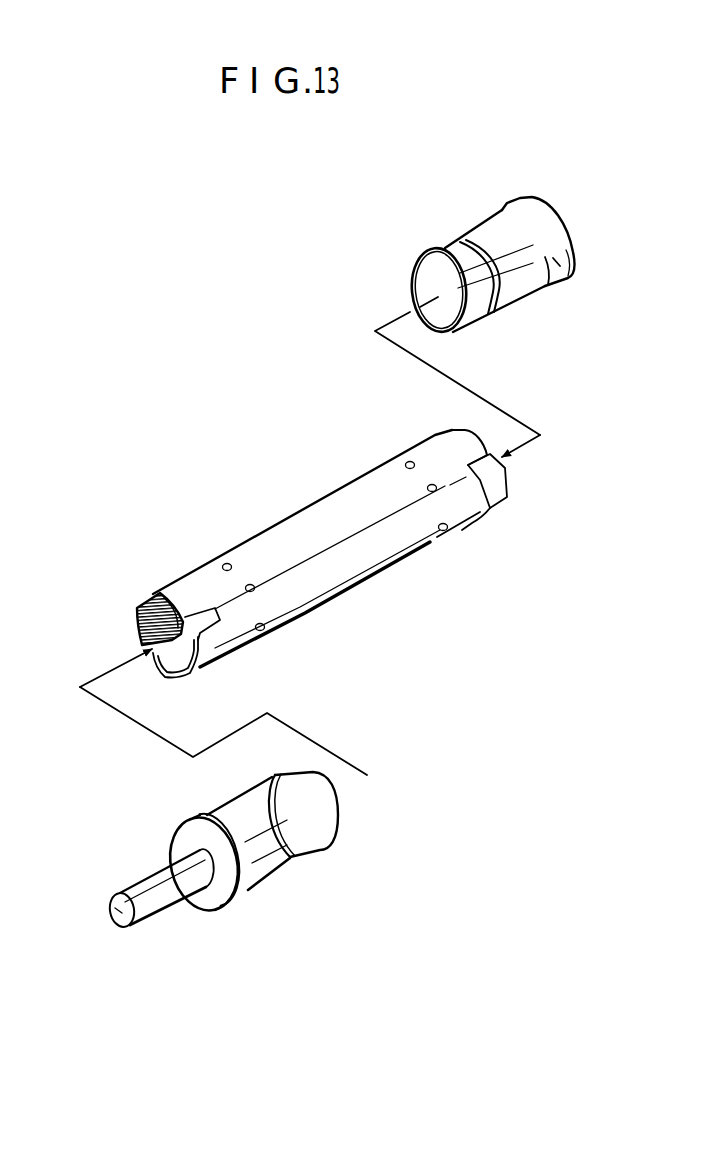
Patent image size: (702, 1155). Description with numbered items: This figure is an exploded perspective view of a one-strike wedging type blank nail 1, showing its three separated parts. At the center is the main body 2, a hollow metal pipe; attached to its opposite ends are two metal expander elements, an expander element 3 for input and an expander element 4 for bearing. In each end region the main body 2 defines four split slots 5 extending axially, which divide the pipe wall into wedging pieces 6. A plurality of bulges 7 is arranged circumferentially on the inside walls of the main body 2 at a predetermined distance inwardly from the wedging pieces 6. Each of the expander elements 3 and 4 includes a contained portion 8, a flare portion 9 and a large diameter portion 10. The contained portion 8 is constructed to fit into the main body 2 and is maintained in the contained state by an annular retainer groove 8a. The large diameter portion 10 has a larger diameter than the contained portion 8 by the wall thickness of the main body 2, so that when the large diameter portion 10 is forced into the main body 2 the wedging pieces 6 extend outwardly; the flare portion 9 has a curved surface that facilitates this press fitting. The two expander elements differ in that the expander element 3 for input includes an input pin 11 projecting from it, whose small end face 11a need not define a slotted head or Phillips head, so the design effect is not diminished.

The blank nail 1 is at (165, 313).
The main body 2 is at (316, 502).
The expander element for input 3 is at (178, 820).
The expander element for bearing 4 is at (532, 195).
The split slots 5 is at (173, 586).
The wedging pieces 6 is at (192, 601).
The bulges 7 is at (260, 623).
The contained portion 8 is at (520, 307).
The annular retainer groove 8a is at (490, 314).
The flare portion 9 is at (547, 288).
The large diameter portion 10 is at (572, 265).
The input pin 11 is at (160, 913).
The end face 11a is at (118, 912).